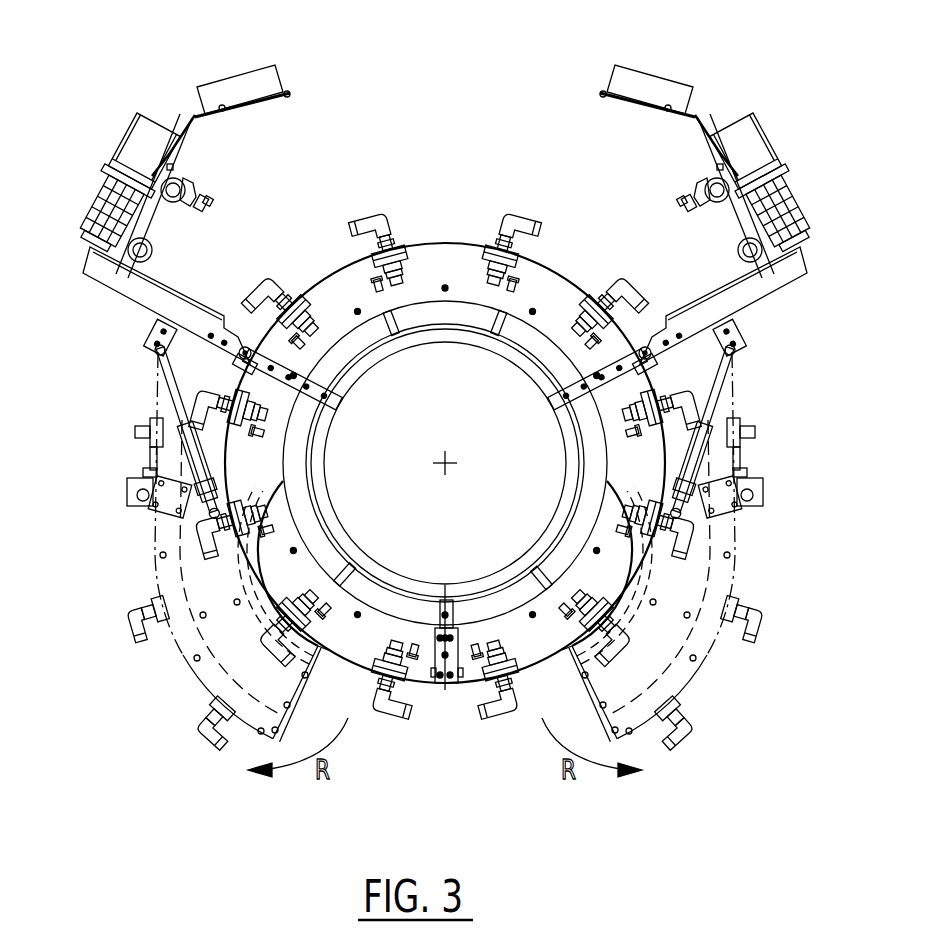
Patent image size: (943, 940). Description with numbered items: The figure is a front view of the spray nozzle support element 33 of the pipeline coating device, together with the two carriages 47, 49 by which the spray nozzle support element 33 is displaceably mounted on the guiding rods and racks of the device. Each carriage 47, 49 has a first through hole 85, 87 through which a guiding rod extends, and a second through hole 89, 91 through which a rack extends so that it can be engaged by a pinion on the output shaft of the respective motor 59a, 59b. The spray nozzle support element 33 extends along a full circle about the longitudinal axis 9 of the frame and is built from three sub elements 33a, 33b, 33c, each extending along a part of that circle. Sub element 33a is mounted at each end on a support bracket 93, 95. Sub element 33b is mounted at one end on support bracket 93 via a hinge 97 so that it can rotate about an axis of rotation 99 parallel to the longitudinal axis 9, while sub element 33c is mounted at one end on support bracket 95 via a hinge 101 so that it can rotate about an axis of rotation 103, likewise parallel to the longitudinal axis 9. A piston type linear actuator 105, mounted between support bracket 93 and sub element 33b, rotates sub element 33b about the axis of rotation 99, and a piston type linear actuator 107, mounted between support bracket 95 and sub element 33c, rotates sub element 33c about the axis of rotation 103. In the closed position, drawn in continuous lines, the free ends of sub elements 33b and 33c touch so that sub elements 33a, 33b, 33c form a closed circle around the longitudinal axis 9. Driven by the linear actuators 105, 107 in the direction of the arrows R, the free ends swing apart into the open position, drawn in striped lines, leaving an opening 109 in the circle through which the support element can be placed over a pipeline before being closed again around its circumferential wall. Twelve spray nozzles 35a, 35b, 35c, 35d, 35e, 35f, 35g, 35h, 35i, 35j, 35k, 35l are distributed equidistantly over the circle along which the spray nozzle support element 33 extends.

The longitudinal axis 9 is at (443, 460).
The spray nozzle support element 33 is at (448, 148).
The sub support element 33a is at (324, 293).
The sub support element 33b is at (720, 575).
The sub support element 33c is at (172, 572).
The spray nozzle 35a is at (378, 220).
The spray nozzle 35b is at (267, 287).
The spray nozzle 35c is at (260, 417).
The spray nozzle 35d is at (310, 520).
The spray nozzle 35e is at (335, 570).
The spray nozzle 35f is at (400, 640).
The spray nozzle 35g is at (495, 640).
The spray nozzle 35h is at (580, 560).
The spray nozzle 35i is at (600, 478).
The spray nozzle 35j is at (598, 408).
The spray nozzle 35k is at (592, 262).
The spray nozzle 35l is at (512, 220).
The carriage 47 is at (733, 222).
The carriage 49 is at (160, 228).
The motor 59a is at (752, 145).
The motor 59b is at (148, 138).
The first through hole 85 is at (712, 186).
The first through hole 87 is at (178, 188).
The second through hole 89 is at (751, 253).
The second through hole 91 is at (140, 252).
The support bracket 93 is at (701, 364).
The support bracket 95 is at (150, 292).
The hinge 97 is at (720, 407).
The axis of rotation 99 is at (645, 347).
The hinge 101 is at (189, 352).
The axis of rotation 103 is at (245, 347).
The piston type linear actuator 105 is at (757, 427).
The piston type linear actuator 107 is at (155, 402).
The opening 109 is at (448, 778).